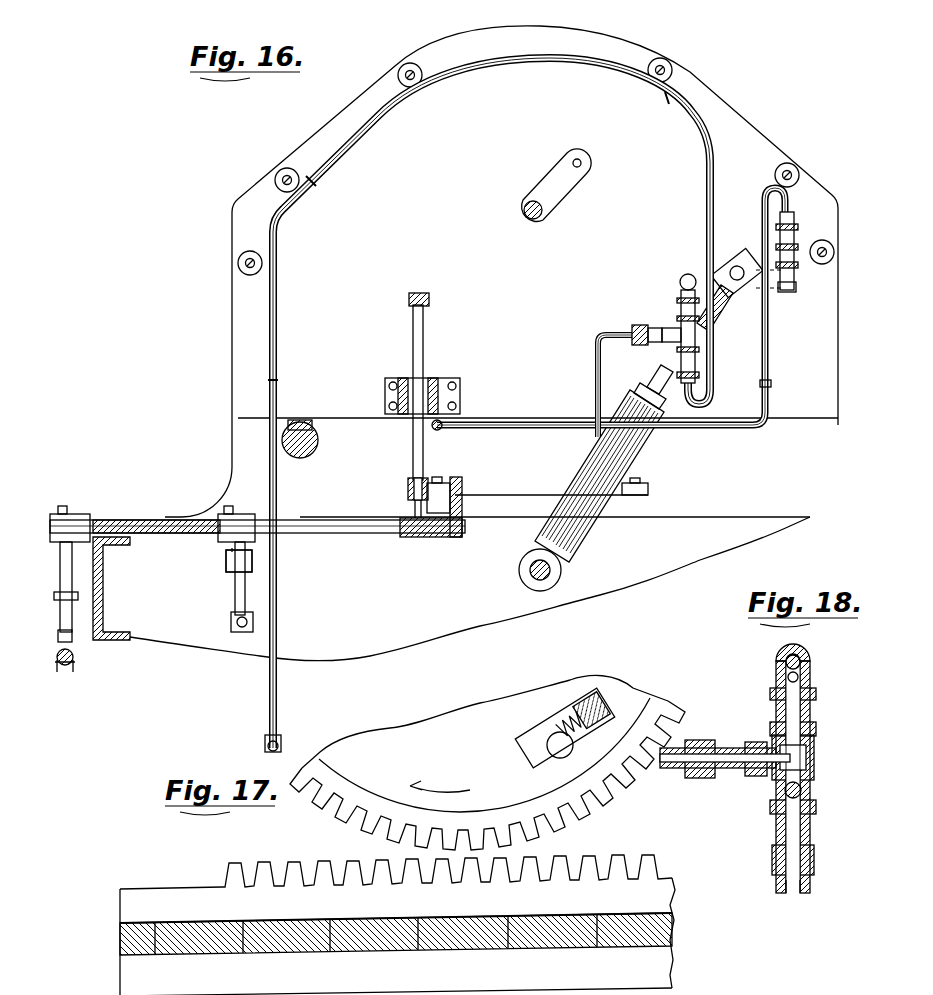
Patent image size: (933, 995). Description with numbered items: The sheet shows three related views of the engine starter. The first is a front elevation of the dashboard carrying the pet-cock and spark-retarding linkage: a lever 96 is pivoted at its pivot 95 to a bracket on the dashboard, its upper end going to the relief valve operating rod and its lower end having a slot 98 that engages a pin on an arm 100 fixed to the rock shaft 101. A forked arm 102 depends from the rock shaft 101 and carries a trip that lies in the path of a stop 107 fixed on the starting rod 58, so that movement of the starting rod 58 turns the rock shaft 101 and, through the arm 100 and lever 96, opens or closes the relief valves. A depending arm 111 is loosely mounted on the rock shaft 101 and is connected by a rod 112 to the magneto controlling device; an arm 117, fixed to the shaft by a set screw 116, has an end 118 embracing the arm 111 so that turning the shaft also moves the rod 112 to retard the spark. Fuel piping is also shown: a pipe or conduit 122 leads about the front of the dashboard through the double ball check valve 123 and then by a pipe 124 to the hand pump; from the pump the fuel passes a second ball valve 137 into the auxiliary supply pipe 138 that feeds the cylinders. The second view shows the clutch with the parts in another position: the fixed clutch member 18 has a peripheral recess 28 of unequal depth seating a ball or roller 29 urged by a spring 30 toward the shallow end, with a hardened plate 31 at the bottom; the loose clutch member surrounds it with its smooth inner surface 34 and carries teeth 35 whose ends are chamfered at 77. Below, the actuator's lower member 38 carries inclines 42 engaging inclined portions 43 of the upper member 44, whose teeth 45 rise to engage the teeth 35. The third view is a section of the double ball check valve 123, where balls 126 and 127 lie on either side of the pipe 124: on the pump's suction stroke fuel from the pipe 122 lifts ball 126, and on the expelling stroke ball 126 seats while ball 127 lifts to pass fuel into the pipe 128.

In FIG. 16, the pipe or conduit 122 is at (470, 72).
In FIG. 18, the pipe or conduit 122 is at (790, 893).
In FIG. 16, the auxiliary supply pipe 138 is at (768, 358).
In FIG. 16, the valve fitting 137 is at (796, 240).
In FIG. 16, the double ball check valve 123 is at (665, 318).
In FIG. 18, the double ball check valve 123 is at (812, 758).
In FIG. 16, the pipe 124 is at (597, 354).
In FIG. 18, the pipe 124 is at (692, 746).
In FIG. 16, the lever 96 is at (425, 348).
In FIG. 16, the pivot 95 is at (455, 393).
In FIG. 16, the slot 98 is at (408, 488).
In FIG. 16, the arm 100 is at (414, 505).
In FIG. 16, the rock shaft 101 is at (356, 524).
In FIG. 16, the set screw 116 is at (234, 512).
In FIG. 16, the bifurcated or forked arm 102 is at (72, 577).
In FIG. 16, the stop 107 is at (72, 640).
In FIG. 16, the starting rod 58 is at (72, 664).
In FIG. 16, the arm 117 is at (226, 557).
In FIG. 16, the end of arm 118 is at (254, 557).
In FIG. 16, the depending arm 111 is at (235, 590).
In FIG. 16, the rod 112 is at (240, 632).
In FIG. 17, the fixed clutch member 18 is at (485, 721).
In FIG. 17, the chamfered tooth end surfaces 77 is at (572, 820).
In FIG. 17, the inner surface of loose clutch member 34 is at (355, 787).
In FIG. 17, the teeth 35 is at (622, 776).
In FIG. 17, the recess 28 is at (540, 765).
In FIG. 17, the ball or roller 29 is at (552, 745).
In FIG. 17, the spring 30 is at (572, 708).
In FIG. 17, the hardened metal plate 31 is at (552, 722).
In FIG. 17, the teeth 45 is at (624, 860).
In FIG. 17, the upper member of the actuator 44 is at (670, 886).
In FIG. 17, the inclined portions 43 is at (584, 916).
In FIG. 17, the inclines 42 is at (625, 935).
In FIG. 17, the lower member of the actuator 38 is at (672, 968).
In FIG. 18, the pipe 128 is at (786, 657).
In FIG. 18, the ball 127 is at (780, 671).
In FIG. 18, the ball 126 is at (784, 796).